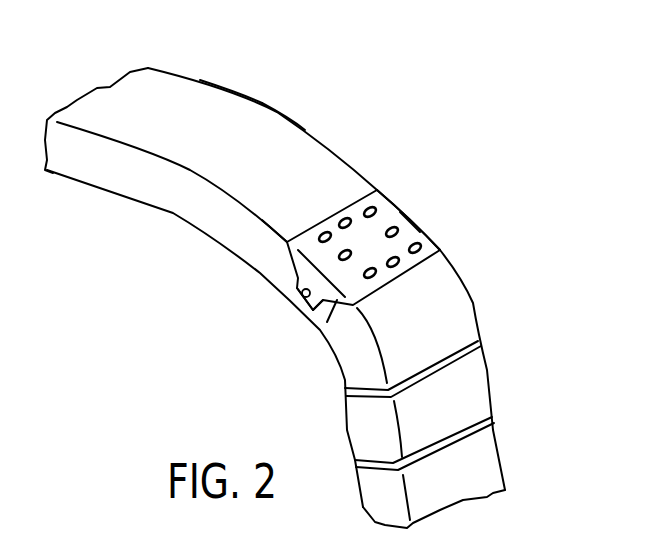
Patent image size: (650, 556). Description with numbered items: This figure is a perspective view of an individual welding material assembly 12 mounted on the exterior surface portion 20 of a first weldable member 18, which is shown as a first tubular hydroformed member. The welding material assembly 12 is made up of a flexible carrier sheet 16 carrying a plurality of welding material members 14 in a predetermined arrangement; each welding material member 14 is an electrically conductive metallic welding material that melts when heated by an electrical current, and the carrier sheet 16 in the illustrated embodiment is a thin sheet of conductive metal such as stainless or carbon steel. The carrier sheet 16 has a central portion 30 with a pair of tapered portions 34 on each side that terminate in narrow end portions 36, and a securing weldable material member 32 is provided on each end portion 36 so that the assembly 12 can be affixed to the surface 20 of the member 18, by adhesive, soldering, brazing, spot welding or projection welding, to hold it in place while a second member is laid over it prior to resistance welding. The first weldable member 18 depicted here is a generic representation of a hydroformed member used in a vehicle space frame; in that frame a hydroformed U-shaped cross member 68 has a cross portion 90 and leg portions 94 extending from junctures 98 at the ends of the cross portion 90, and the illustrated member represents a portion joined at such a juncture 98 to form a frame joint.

The welding material assembly 12 is at (415, 207).
The welding material member 14 is at (387, 197).
The flexible carrier sheet 16 is at (413, 237).
The first weldable member 18 is at (200, 80).
The exterior surface portion 20 is at (472, 310).
The central portion 30 is at (305, 240).
The securing weldable material member 32 is at (298, 305).
The tapered portion 34 is at (322, 327).
The narrow end portion 36 is at (295, 290).
The hydroformed U-shaped cross member 68 is at (272, 123).
The cross portion 90 is at (240, 113).
The leg portion 94 is at (480, 465).
The juncture 98 is at (450, 335).